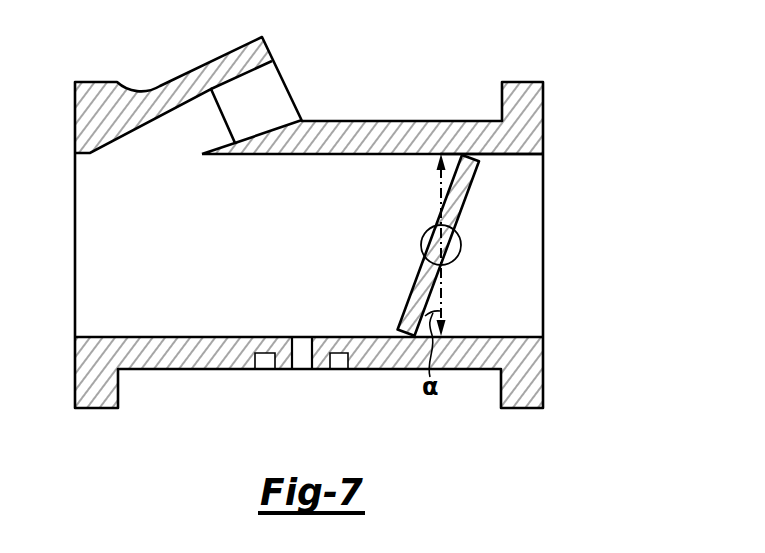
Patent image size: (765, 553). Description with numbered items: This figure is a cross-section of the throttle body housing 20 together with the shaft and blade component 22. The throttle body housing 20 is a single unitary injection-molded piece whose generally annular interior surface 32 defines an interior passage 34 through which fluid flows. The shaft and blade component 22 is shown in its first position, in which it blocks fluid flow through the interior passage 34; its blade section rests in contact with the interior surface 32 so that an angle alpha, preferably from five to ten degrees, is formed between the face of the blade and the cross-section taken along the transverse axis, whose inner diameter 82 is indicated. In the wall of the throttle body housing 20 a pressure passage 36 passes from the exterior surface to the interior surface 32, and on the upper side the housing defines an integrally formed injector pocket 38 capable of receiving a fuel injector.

The throttle body housing 20 is at (411, 132).
The shaft and blade component 22 is at (467, 199).
The interior surface 32 is at (523, 154).
The interior passage 34 is at (526, 238).
The pressure passage 36 is at (300, 357).
The injector pocket 38 is at (262, 89).
The inner diameter 82 is at (440, 302).